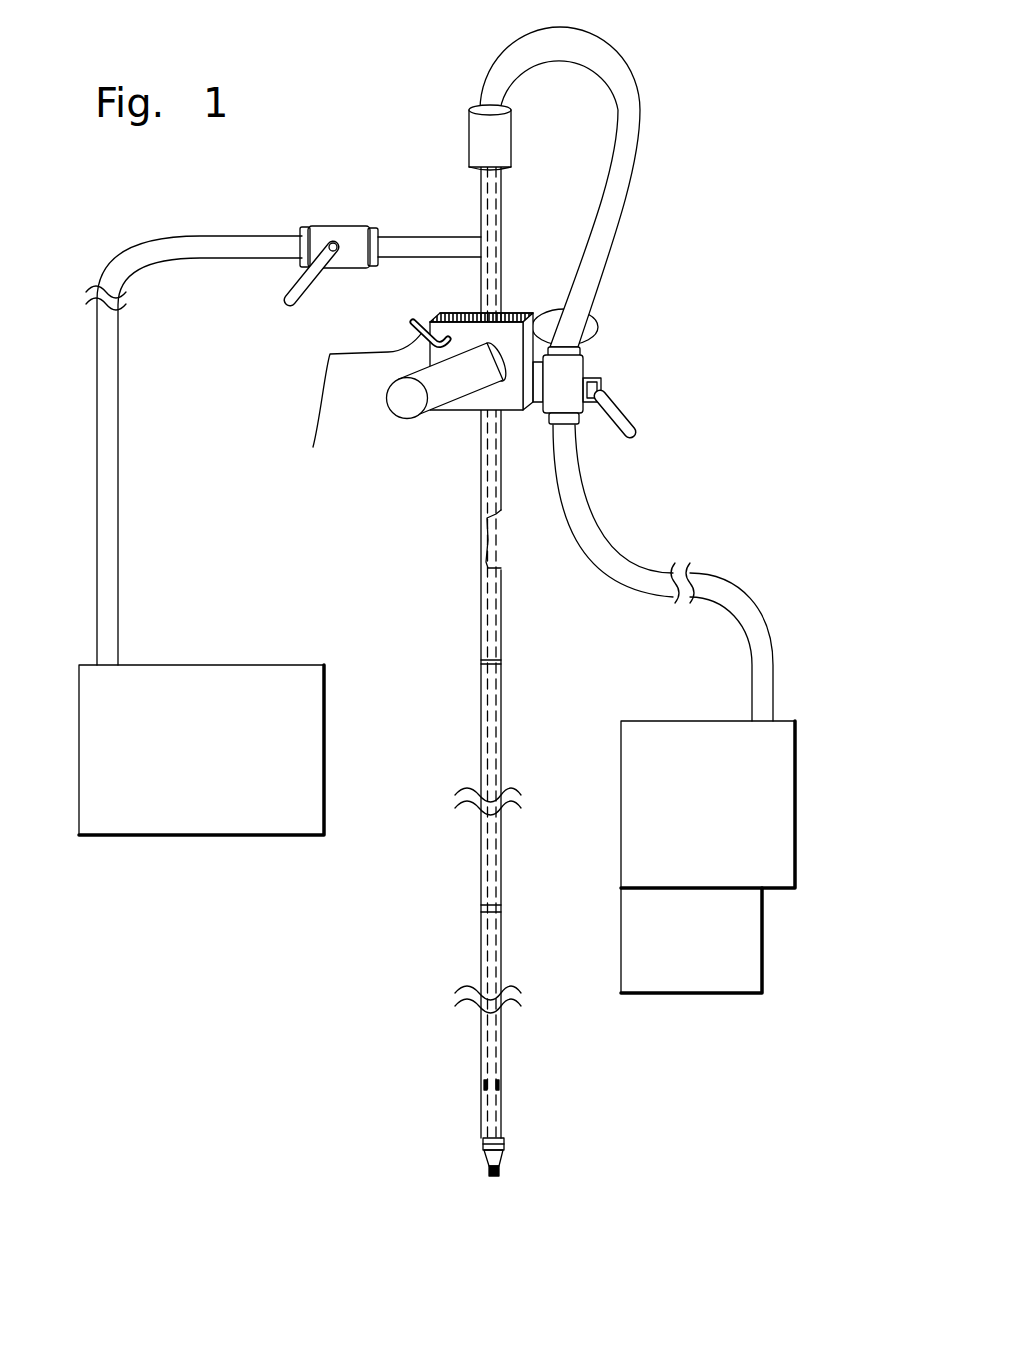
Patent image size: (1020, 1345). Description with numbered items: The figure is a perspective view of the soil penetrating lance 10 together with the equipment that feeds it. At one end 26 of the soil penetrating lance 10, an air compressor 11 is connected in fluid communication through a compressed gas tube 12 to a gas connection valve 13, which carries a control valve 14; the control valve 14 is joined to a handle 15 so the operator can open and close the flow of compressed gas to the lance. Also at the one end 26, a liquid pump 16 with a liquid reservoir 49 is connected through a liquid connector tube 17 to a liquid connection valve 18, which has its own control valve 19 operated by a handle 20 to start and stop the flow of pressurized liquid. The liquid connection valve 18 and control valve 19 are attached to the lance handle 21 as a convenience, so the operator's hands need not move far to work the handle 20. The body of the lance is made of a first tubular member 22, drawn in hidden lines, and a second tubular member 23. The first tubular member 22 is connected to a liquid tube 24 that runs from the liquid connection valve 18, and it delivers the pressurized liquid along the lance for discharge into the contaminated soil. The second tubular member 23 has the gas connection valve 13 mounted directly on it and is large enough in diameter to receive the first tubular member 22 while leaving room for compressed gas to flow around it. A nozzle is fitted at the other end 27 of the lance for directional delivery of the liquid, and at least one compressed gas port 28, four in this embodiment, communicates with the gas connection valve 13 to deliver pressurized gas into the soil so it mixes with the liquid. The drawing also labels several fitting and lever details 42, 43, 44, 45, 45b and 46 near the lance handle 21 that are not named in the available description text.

The soil penetrating lance 10 is at (470, 645).
The air compressor 11 is at (326, 783).
The compressed gas tube 12 is at (143, 290).
The gas connection valve 13 is at (355, 268).
The control valve 14 is at (335, 246).
The handle 15 is at (297, 312).
The liquid pump 16 is at (797, 803).
The liquid connector tube 17 is at (597, 545).
The liquid connection valve 18 is at (600, 373).
The control valve 19 is at (607, 395).
The handle 20 is at (633, 434).
The lance handle 21 is at (456, 422).
The first tubular member 22 is at (502, 532).
The second tubular member 23 is at (502, 627).
The liquid tube 24 is at (532, 53).
The one end 26 is at (478, 200).
The other end 27 is at (483, 1125).
The compressed gas port 28 is at (503, 1085).
The fitting 42 is at (597, 323).
The block top 43 is at (528, 313).
The hook 44 is at (426, 323).
The block edge 45 is at (450, 295).
The block edge 45b is at (450, 306).
The lever 46 is at (354, 414).
The liquid reservoir 49 is at (764, 940).